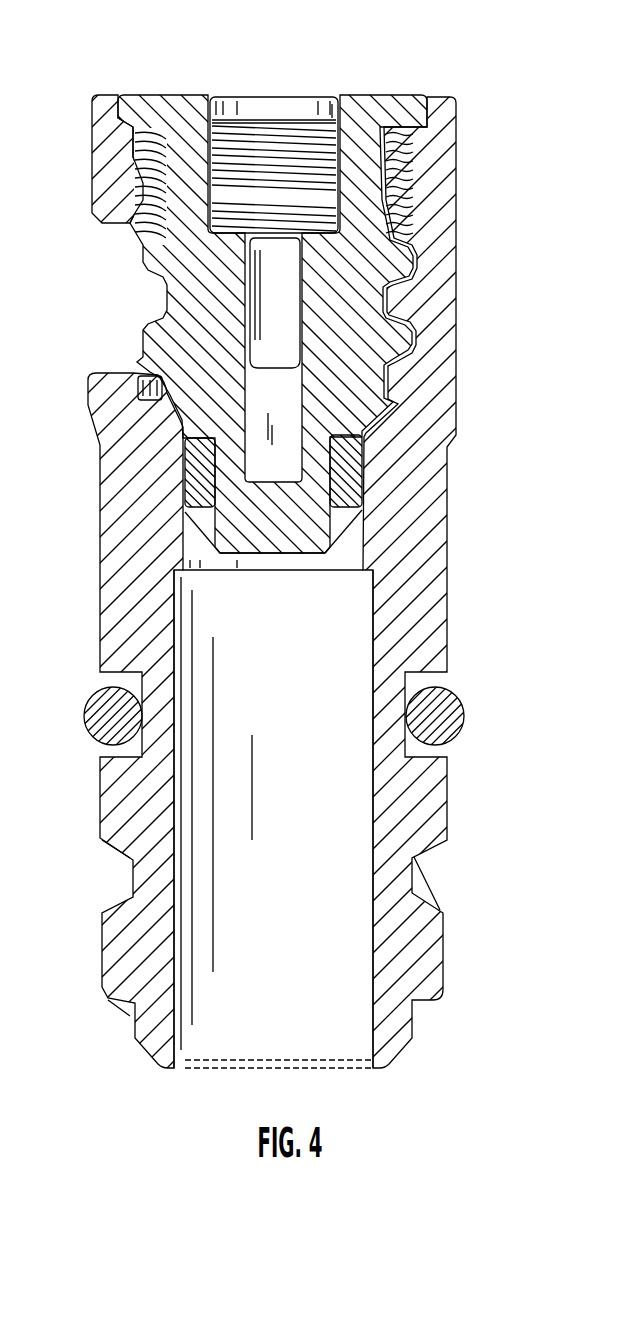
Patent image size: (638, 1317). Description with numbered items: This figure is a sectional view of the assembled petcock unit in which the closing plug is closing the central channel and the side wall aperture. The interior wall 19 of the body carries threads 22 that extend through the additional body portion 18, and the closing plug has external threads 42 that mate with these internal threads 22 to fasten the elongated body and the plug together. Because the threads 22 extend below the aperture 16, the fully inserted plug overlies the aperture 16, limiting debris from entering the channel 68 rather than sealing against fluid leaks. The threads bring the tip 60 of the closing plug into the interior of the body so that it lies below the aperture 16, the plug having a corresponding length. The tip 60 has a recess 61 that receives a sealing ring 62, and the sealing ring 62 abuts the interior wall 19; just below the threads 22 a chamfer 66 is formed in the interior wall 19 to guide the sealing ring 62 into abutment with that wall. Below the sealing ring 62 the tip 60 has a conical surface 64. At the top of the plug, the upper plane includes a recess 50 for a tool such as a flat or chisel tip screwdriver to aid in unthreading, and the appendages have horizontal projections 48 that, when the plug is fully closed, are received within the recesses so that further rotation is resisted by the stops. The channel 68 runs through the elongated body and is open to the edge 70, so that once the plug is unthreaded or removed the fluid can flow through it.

The aperture 16 is at (94, 257).
The additional body portion 18 is at (435, 212).
The interior wall 19 is at (272, 110).
The threads 22 is at (300, 150).
The external threads 42 is at (156, 283).
The projections 48 is at (150, 95).
The recess 50 is at (275, 341).
The tip 60 is at (272, 529).
The recess 61 is at (190, 506).
The sealing ring 62 is at (364, 474).
The conical surface 64 is at (376, 571).
The chamfer 66 is at (365, 430).
The channel 68 is at (265, 825).
The edge 70 is at (188, 1068).